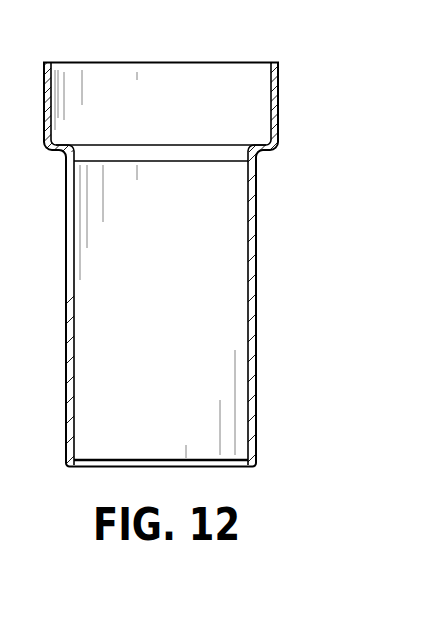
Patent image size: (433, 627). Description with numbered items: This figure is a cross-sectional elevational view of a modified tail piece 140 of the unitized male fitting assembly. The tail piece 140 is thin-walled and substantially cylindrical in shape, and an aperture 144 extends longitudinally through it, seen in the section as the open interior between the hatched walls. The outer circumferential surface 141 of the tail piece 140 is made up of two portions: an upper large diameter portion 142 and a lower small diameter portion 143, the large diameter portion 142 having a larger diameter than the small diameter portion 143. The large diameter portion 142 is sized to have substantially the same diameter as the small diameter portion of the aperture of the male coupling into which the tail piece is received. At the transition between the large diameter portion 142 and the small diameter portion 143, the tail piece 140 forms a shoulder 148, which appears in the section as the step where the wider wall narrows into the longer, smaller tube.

The tail piece 140 is at (278, 292).
The outer circumferential surface 141 is at (276, 141).
The large diameter portion 142 is at (278, 80).
The small diameter portion 143 is at (256, 378).
The aperture 144 is at (166, 92).
The shoulder 148 is at (258, 158).